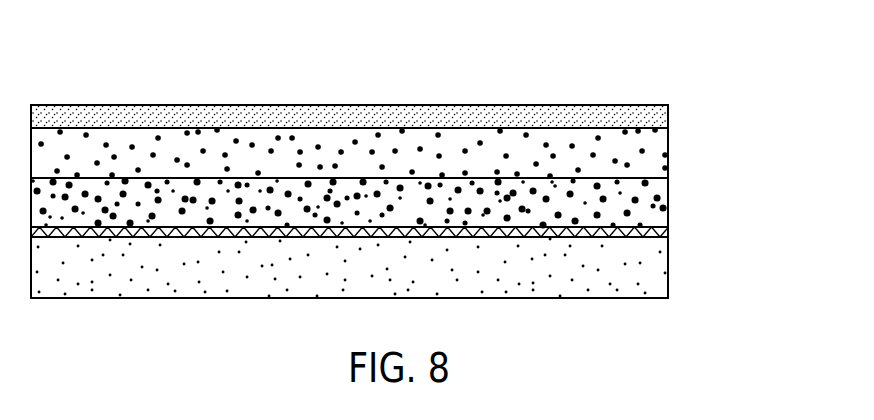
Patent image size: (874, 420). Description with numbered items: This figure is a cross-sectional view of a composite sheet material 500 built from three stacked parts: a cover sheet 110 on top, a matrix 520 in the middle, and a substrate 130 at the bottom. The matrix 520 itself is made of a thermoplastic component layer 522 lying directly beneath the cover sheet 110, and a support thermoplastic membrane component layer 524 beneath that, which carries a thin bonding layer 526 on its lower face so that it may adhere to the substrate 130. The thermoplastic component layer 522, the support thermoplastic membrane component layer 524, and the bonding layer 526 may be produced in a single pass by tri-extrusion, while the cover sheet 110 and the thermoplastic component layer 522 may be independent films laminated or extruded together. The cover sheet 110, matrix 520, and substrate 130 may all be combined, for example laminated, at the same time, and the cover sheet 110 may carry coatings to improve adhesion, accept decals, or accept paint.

The composite sheet material 500 is at (175, 83).
The cover sheet 110 is at (672, 120).
The matrix 520 is at (426, 181).
The thermoplastic component layer 522 is at (670, 155).
The support thermoplastic membrane component layer 524 is at (670, 200).
The bonding layer 526 is at (393, 221).
The substrate 130 is at (673, 270).